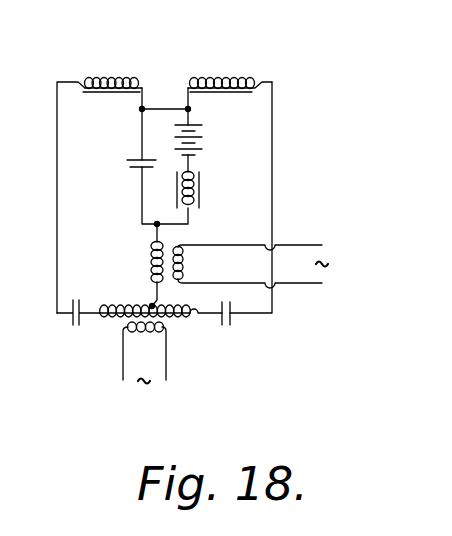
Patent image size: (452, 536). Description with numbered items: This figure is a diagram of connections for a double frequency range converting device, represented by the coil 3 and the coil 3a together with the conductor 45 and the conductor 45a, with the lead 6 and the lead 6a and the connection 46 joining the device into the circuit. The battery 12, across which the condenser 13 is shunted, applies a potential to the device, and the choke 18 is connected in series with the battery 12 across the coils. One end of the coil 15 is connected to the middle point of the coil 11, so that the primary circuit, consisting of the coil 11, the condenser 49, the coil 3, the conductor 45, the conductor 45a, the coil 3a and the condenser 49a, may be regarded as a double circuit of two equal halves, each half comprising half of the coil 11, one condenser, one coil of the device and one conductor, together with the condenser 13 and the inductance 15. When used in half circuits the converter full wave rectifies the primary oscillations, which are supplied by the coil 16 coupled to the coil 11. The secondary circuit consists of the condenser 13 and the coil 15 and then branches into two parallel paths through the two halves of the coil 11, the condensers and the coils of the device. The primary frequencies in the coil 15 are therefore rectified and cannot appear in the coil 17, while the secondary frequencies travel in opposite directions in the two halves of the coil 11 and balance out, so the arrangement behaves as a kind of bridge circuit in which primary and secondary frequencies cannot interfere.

The coil 3 is at (112, 78).
The coil 3a is at (228, 80).
The lead 6 is at (71, 82).
The lead 6a is at (272, 82).
The coil 11 is at (189, 318).
The battery 12 is at (204, 143).
The condenser 13 is at (132, 168).
The coil 15 is at (163, 252).
The coil 16 is at (138, 335).
The coil 17 is at (184, 262).
The choke 18 is at (200, 190).
The conductor 45 is at (107, 93).
The conductor 45a is at (230, 93).
The connection 46 is at (187, 101).
The condenser 49 is at (73, 322).
The condenser 49a is at (230, 322).